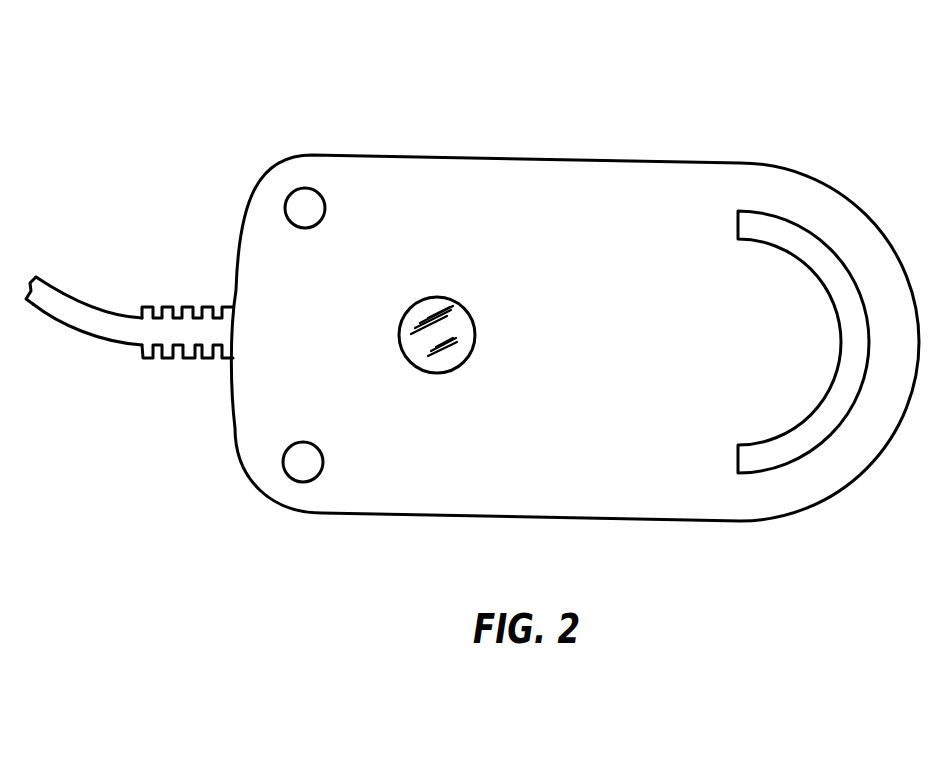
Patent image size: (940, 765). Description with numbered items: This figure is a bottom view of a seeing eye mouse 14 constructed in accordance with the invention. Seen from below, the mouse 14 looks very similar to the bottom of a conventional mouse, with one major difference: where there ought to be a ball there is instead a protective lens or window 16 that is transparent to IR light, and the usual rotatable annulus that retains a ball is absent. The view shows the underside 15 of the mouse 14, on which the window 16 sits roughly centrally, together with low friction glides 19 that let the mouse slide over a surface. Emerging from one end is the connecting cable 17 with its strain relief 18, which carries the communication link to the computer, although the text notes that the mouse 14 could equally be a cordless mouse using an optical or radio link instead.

The mouse 14 is at (465, 53).
The underside of the mouse 15 is at (623, 205).
The protective lens or window 16 is at (475, 335).
The connecting cable 17 is at (75, 333).
The strain relief 18 is at (185, 360).
The low friction glides 19 is at (300, 227).